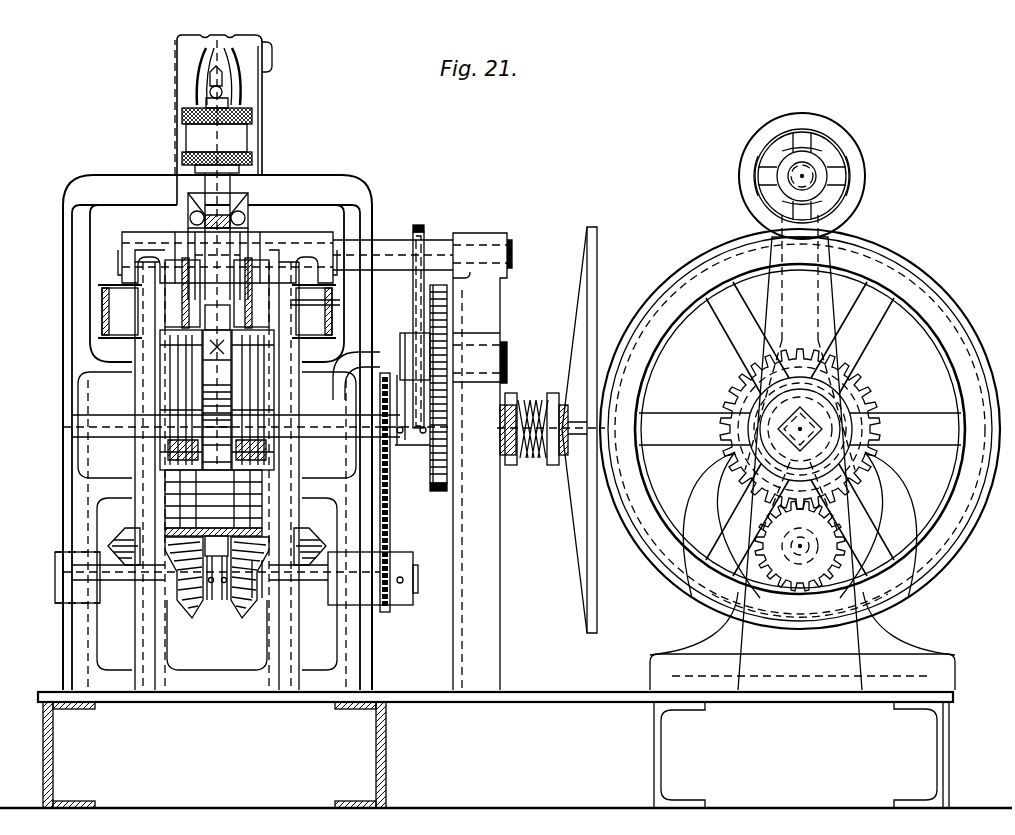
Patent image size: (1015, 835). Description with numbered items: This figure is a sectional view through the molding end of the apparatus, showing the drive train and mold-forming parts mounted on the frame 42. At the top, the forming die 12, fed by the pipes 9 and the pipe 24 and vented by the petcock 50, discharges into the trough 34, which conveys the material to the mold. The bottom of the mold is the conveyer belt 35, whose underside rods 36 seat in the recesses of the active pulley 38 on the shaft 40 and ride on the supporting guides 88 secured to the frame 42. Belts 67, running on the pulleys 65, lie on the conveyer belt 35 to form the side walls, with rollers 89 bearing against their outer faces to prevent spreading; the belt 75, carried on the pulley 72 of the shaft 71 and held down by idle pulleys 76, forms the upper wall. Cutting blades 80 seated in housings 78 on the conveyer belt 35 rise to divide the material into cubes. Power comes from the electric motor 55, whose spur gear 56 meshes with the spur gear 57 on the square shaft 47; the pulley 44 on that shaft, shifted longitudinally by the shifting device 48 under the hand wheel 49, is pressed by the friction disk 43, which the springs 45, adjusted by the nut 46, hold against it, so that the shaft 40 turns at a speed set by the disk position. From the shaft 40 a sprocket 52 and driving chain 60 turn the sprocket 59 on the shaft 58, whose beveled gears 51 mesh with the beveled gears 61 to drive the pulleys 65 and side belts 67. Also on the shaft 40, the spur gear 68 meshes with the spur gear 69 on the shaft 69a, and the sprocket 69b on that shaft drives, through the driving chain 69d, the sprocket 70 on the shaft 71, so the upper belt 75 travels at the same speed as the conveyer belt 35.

The pipes 9 is at (196, 70).
The forming die 12 is at (197, 166).
The pipe 24 is at (272, 60).
The trough 34 is at (232, 192).
The bottom conveyer belt 35 is at (314, 311).
The rods 36 is at (170, 475).
The active pulley 38 is at (135, 372).
The shaft 40 is at (258, 429).
The frame 42 is at (78, 652).
The friction disk 43 is at (597, 558).
The pulley 44 is at (698, 282).
The springs 45 is at (538, 462).
The nut 46 is at (510, 465).
The square shaft 47 is at (807, 430).
The shifting device 48 is at (865, 273).
The hand wheel 49 is at (820, 128).
The petcock 50 is at (207, 96).
The beveled gears 51 is at (192, 618).
The sprocket 52 is at (392, 432).
The electric motor 55 is at (900, 640).
The spur gear 56 is at (827, 549).
The spur gear 57 is at (852, 395).
The shaft 58 is at (258, 600).
The sprocket 59 is at (392, 583).
The driving chain 60 is at (385, 612).
The beveled gears 61 is at (122, 528).
The pulleys 65 is at (117, 302).
The belts 67 is at (103, 293).
The spur gear 68 is at (438, 491).
The spur gear 69 is at (445, 312).
The shaft 69a is at (369, 366).
The sprocket 69b is at (408, 348).
The driving chain 69d is at (418, 225).
The sprocket 70 is at (425, 250).
The shaft 71 is at (393, 255).
The pulley 72 is at (225, 255).
The belt 75 is at (230, 218).
The idle pulleys 76 is at (220, 272).
The housings 78 is at (213, 503).
The blades 80 is at (219, 452).
The supporting guides 88 is at (168, 380).
The rollers 89 is at (185, 318).